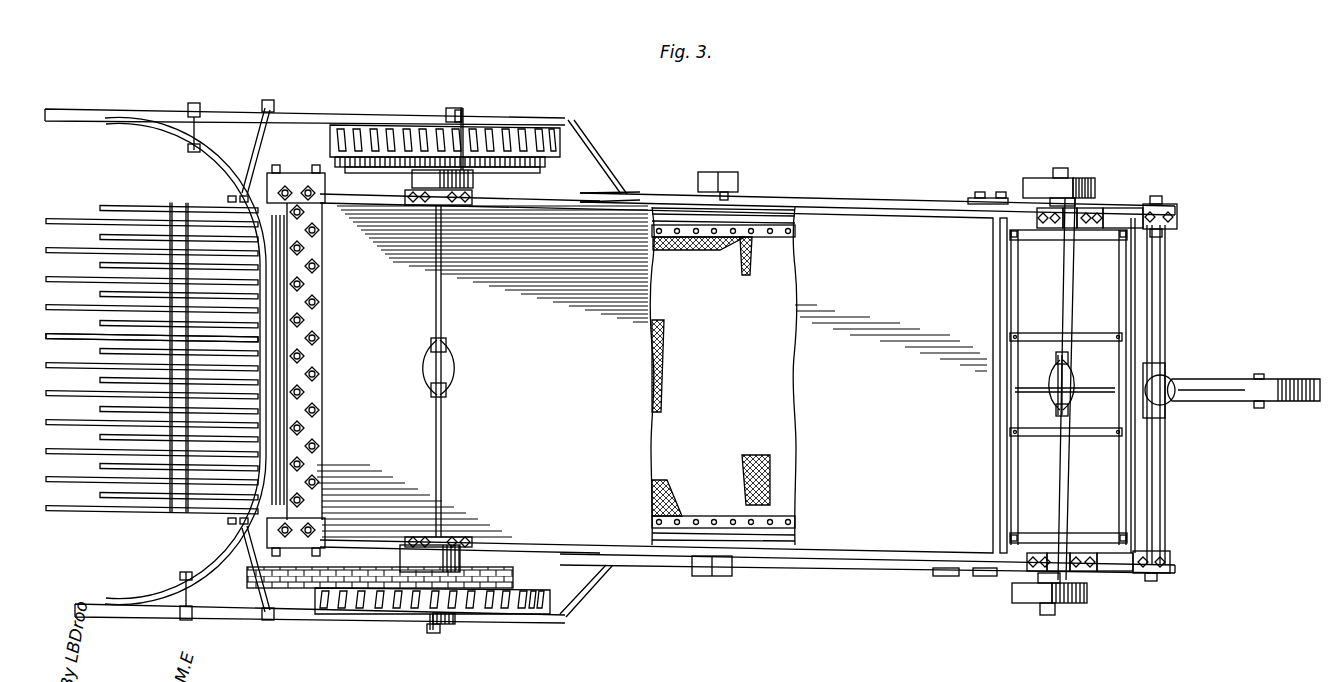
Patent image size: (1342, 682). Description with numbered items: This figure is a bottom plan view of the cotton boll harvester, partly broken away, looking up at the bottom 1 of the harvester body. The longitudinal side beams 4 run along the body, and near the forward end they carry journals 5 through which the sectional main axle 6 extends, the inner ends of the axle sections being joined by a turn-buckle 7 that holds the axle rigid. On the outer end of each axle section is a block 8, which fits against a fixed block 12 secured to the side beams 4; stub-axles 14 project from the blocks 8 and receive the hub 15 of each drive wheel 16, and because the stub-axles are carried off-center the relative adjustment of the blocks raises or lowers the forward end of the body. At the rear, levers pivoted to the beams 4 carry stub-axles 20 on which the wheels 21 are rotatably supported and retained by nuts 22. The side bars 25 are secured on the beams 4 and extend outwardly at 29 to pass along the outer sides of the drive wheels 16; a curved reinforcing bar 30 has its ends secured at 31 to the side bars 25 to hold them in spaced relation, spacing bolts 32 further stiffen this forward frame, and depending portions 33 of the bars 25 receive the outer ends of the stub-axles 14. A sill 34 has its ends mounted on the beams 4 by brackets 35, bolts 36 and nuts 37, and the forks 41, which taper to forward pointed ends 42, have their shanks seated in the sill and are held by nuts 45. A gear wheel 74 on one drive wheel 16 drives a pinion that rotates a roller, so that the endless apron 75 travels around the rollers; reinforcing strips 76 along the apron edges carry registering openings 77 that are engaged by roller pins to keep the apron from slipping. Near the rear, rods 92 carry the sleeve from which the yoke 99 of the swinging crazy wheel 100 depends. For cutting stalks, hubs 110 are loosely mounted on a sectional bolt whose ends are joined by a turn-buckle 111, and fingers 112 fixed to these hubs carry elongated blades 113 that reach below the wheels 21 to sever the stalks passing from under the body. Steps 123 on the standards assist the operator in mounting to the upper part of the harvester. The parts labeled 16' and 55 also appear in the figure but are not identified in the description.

The bottom of the harvester body 1 is at (893, 555).
The longitudinal side beams 4 is at (862, 206).
The journals 5 is at (426, 205).
The sectional main axle 6 is at (443, 306).
The turn-buckle 7 is at (448, 366).
The block 8 is at (412, 178).
The block 12 is at (474, 188).
The stub-axles 14 is at (444, 112).
The hub 15 is at (1054, 552).
The drive wheel 16 is at (723, 371).
The bearing plate 16' is at (1072, 204).
The stub-axles 20 is at (1062, 176).
The wheels 21 is at (982, 600).
The nuts 22 is at (1058, 176).
The side bars 25 is at (622, 190).
The outwardly extending portion of side bar 29 is at (566, 126).
The reinforcing bar 30 is at (234, 167).
The secured ends of reinforcing bar 31 is at (121, 125).
The spacing bolts 32 is at (212, 121).
The depending portions 33 is at (461, 123).
The sill 34 is at (316, 358).
The brackets 35 is at (326, 178).
The bolts 36 is at (276, 166).
The nuts 37 is at (316, 343).
The forks 41 is at (90, 270).
The forward pointed ends 42 is at (54, 336).
The nuts 45 is at (312, 415).
The brickwork 55 is at (296, 590).
The gear wheel 74 is at (450, 179).
The endless apron 75 is at (344, 140).
The reinforcing strips 76 is at (731, 241).
The registering openings 77 is at (697, 228).
The rods 92 is at (1166, 284).
The yoke 99 is at (1178, 381).
The crazy wheel 100 is at (1283, 380).
The hubs 110 is at (1066, 440).
The turn-buckle 111 is at (1070, 382).
The fingers 112 is at (1088, 340).
The elongated blades 113 is at (1002, 458).
The steps 123 is at (762, 159).